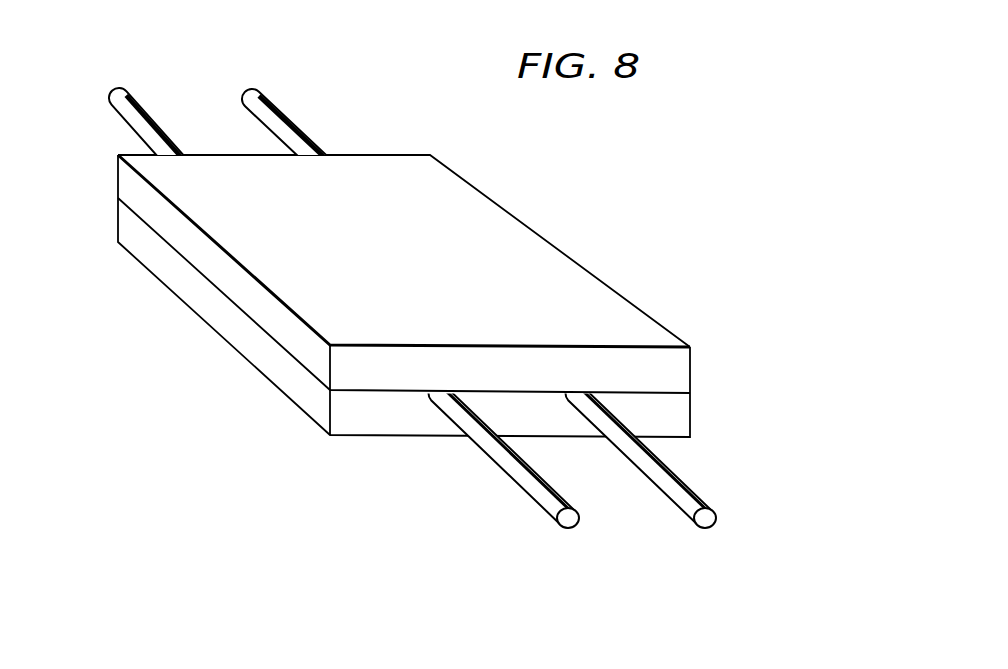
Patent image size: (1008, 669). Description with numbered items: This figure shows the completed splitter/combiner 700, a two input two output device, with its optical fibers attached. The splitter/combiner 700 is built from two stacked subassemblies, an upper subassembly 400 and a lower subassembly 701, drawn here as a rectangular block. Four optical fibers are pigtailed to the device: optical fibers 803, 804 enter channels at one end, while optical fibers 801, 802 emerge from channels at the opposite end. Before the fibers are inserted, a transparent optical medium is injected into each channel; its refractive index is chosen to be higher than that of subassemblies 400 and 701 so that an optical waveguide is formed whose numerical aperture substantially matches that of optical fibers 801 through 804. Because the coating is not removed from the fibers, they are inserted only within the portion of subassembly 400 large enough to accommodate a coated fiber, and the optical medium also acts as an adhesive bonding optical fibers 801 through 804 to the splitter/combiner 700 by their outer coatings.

The splitter/combiner 700 is at (478, 314).
The subassembly 400 is at (687, 372).
The subassembly 701 is at (687, 416).
The optical fiber 801 is at (523, 475).
The optical fiber 802 is at (702, 495).
The optical fiber 803 is at (148, 110).
The optical fiber 804 is at (277, 110).